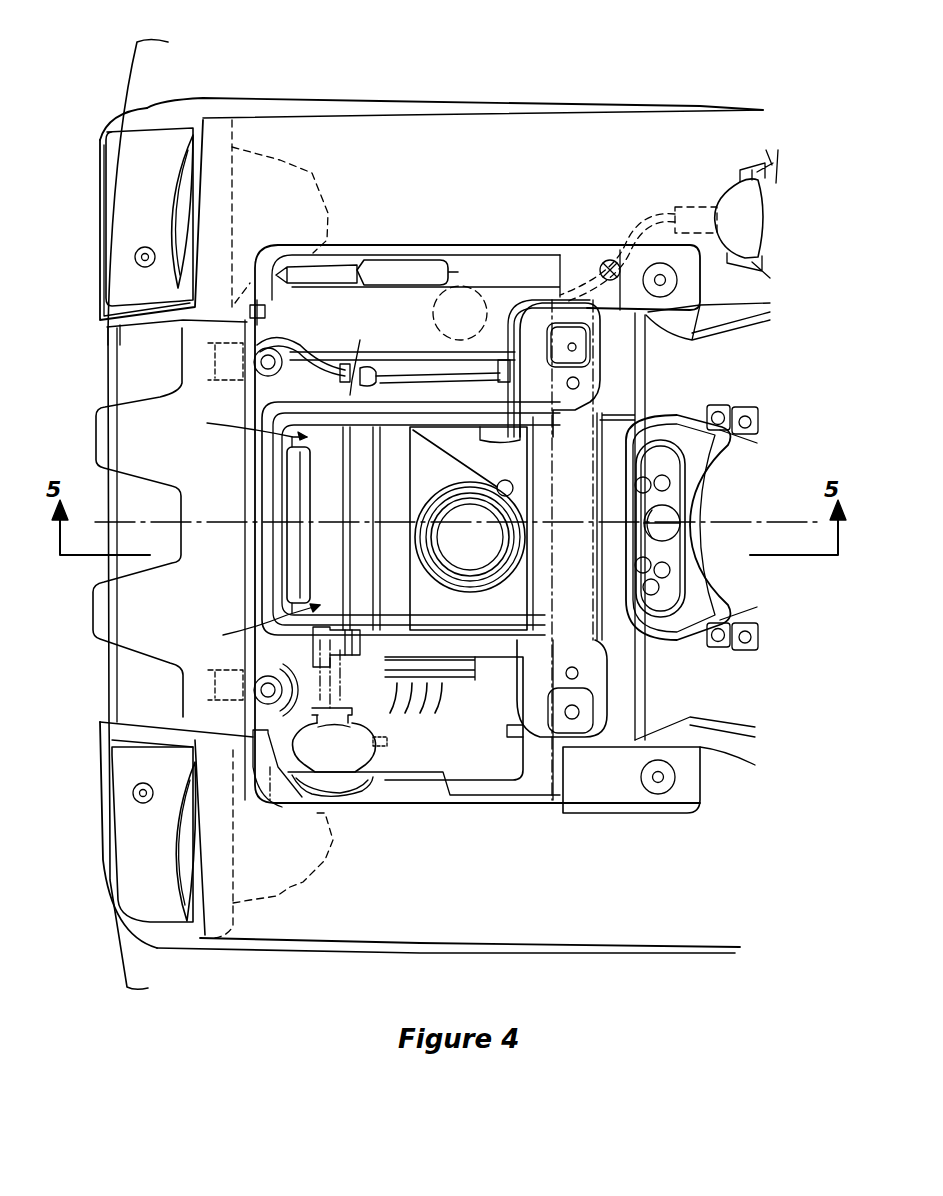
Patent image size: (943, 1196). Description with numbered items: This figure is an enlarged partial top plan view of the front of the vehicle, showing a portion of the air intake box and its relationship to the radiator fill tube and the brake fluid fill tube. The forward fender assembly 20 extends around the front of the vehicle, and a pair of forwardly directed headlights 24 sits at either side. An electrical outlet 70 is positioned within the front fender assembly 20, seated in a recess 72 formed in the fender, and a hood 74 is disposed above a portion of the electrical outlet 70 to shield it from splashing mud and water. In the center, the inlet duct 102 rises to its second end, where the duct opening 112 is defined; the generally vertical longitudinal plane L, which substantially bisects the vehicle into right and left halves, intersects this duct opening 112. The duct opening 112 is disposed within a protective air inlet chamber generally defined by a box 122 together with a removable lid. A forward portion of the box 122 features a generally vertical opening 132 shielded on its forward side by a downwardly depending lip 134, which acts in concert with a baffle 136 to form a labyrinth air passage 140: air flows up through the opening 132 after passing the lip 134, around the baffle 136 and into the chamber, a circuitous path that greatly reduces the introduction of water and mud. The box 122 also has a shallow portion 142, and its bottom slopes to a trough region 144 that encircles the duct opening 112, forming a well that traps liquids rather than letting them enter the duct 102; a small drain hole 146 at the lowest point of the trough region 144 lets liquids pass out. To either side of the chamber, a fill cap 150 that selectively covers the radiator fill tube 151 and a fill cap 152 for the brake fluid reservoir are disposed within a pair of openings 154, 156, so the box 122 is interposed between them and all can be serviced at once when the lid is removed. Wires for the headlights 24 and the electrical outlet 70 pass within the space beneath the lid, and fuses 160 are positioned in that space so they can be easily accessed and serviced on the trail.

The forward fender assembly 20 is at (590, 953).
The headlights 24 is at (178, 214).
The electrical outlet 70 is at (697, 205).
The recess 72 is at (776, 183).
The hood 74 is at (738, 182).
The inlet duct 102 is at (452, 583).
The duct opening 112 is at (470, 537).
The box 122 is at (513, 613).
The opening 132 is at (290, 540).
The lip 134 is at (280, 475).
The baffle 136 is at (302, 492).
The labyrinth air passage 140 is at (244, 530).
The shallow portion 142 is at (362, 528).
The trough region 144 is at (471, 523).
The drain hole 146 is at (500, 484).
The fill cap 150 is at (350, 772).
The fill tube 151 is at (347, 700).
The fill cap 152 is at (480, 290).
The opening 154 is at (472, 760).
The opening 156 is at (373, 305).
The fuses 160 is at (362, 372).
The longitudinal plane L is at (768, 522).